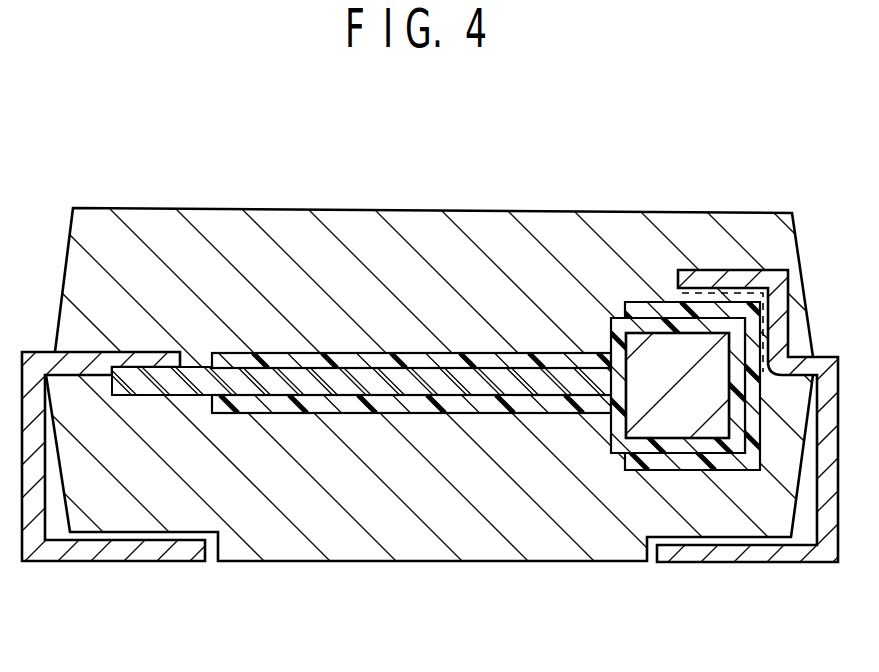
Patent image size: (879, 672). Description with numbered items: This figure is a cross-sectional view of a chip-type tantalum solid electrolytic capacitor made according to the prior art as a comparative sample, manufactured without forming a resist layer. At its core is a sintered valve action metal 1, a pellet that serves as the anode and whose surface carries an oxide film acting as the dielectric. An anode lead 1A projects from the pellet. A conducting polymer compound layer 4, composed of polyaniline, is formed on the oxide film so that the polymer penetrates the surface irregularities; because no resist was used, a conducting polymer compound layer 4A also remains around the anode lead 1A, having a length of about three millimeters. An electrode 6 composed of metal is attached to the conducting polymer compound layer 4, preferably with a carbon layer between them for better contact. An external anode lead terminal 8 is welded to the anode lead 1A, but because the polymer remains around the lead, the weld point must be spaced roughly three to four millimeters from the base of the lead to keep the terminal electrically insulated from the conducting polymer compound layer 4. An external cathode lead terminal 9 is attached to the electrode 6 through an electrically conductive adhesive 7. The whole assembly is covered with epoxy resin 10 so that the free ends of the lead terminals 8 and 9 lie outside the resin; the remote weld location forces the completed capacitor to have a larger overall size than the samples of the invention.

The sintered valve action metal 1 is at (657, 427).
The anode lead 1A is at (327, 378).
The conducting polymer compound layer 4 is at (645, 328).
The conducting polymer compound layer 4A is at (378, 356).
The electrode 6 is at (665, 310).
The electrically conductive adhesive 7 is at (703, 290).
The external anode lead terminal 8 is at (90, 552).
The external cathode lead terminal 9 is at (742, 558).
The epoxy resin 10 is at (103, 223).